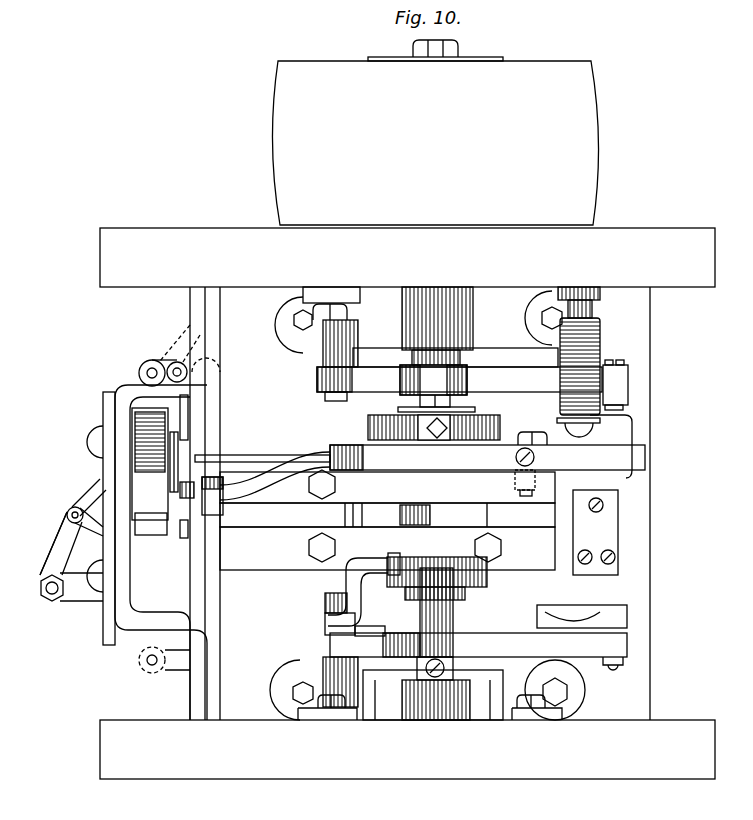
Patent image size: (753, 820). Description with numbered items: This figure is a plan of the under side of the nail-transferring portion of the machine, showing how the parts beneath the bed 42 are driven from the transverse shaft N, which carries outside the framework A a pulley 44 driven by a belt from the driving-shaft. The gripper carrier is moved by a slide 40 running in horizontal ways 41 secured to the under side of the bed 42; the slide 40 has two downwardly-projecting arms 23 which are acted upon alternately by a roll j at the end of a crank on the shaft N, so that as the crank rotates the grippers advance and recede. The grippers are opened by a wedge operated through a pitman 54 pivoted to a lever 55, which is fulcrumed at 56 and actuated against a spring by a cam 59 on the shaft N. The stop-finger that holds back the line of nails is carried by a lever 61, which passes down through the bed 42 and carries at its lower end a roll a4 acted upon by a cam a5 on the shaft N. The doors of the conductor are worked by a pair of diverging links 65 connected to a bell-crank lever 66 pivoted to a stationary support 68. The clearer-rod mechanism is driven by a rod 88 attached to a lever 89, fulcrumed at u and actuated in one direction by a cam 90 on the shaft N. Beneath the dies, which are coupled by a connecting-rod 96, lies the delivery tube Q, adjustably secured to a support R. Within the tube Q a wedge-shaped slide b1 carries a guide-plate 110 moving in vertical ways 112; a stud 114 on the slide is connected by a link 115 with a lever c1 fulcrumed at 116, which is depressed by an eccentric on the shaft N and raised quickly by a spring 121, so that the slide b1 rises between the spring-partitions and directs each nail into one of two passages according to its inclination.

The pulley 44 is at (435, 143).
The framework A is at (407, 749).
The connecting-rod 96 is at (207, 598).
The support R is at (122, 408).
The wedge-shaped slide b1 is at (150, 464).
The delivery tube Q is at (155, 538).
The guide-plate 110 is at (176, 450).
The vertical ways 112 is at (186, 533).
The stud 114 is at (205, 480).
The link 115 is at (210, 490).
The diverging links 65 is at (92, 528).
The bell-crank lever 66 is at (88, 606).
The stationary support 68 is at (71, 556).
The cam 90 is at (433, 380).
The lever 89 is at (459, 379).
The fulcrum u is at (338, 401).
The rod 88 is at (628, 395).
The spring 121 is at (615, 418).
The lever c1 is at (665, 455).
The fulcrum 116 is at (520, 490).
The horizontal ways 41 is at (387, 520).
The slide 40 is at (387, 515).
The downwardly-projecting arms 23 is at (490, 512).
The roll j is at (400, 512).
The roll a4 is at (396, 548).
The cam a5 is at (480, 572).
The transverse shaft N is at (455, 614).
The lever 61 is at (362, 600).
The fulcrum 56 is at (325, 643).
The cam 59 is at (395, 636).
The bed 42 is at (282, 607).
The lever 55 is at (478, 651).
The pitman 54 is at (598, 613).